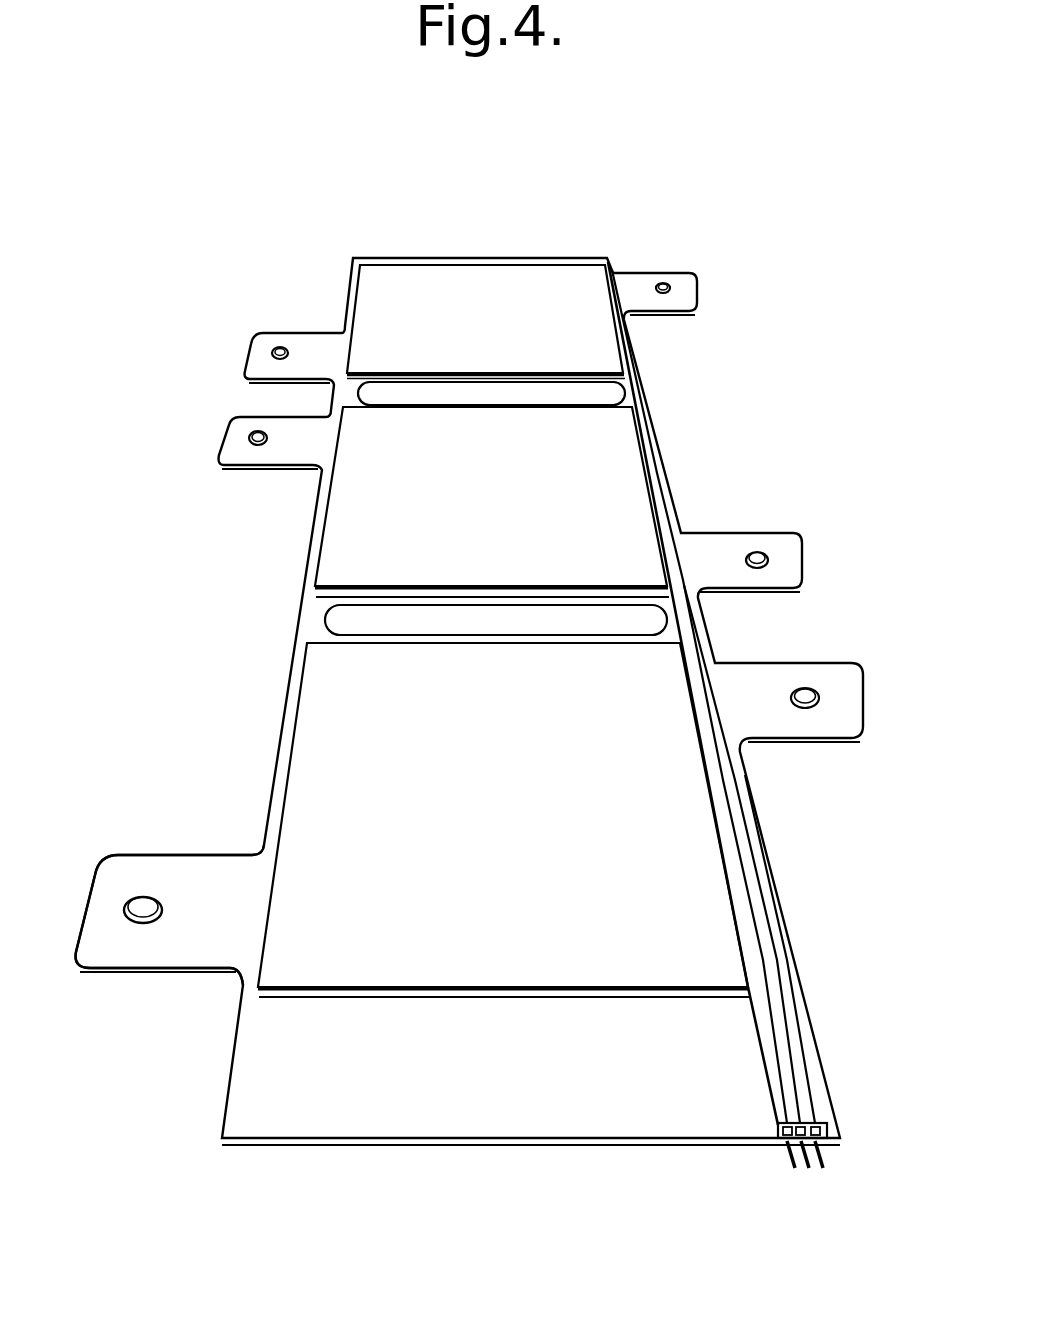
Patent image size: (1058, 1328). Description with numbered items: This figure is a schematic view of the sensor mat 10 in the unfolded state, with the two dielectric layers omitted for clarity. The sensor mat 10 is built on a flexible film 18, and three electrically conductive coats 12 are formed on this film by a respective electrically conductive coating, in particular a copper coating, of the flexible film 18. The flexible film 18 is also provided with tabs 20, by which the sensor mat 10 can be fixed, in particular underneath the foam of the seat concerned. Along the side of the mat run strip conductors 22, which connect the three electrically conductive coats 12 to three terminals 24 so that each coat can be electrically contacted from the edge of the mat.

The sensor mat 10 is at (567, 216).
The electrically conductive coat 12 is at (425, 288).
The flexible film 18 is at (327, 1122).
The tab 20 is at (162, 953).
The strip conductor 22 is at (805, 1082).
The terminal 24 is at (840, 1178).